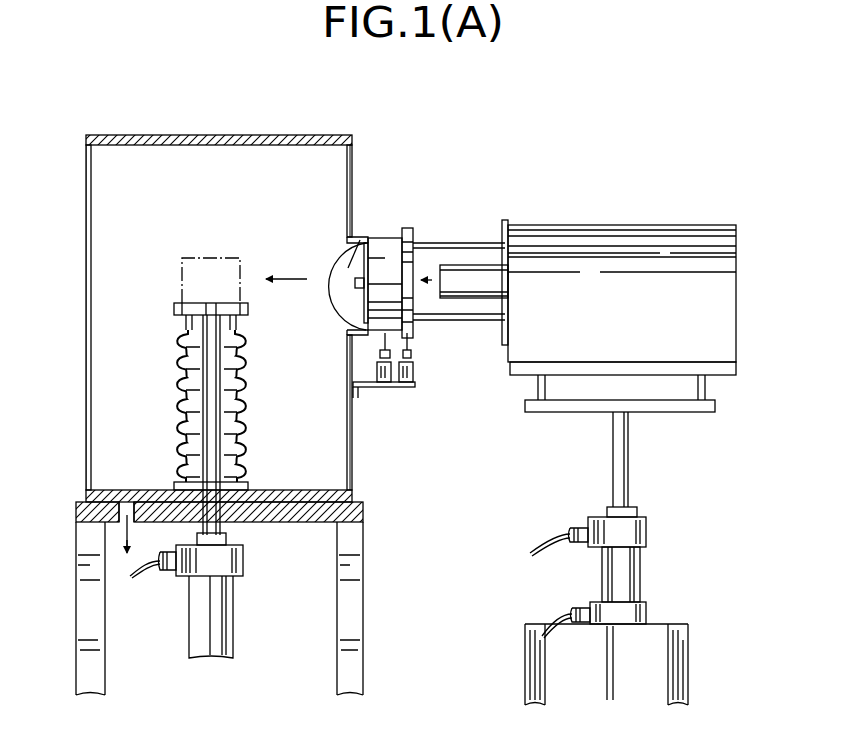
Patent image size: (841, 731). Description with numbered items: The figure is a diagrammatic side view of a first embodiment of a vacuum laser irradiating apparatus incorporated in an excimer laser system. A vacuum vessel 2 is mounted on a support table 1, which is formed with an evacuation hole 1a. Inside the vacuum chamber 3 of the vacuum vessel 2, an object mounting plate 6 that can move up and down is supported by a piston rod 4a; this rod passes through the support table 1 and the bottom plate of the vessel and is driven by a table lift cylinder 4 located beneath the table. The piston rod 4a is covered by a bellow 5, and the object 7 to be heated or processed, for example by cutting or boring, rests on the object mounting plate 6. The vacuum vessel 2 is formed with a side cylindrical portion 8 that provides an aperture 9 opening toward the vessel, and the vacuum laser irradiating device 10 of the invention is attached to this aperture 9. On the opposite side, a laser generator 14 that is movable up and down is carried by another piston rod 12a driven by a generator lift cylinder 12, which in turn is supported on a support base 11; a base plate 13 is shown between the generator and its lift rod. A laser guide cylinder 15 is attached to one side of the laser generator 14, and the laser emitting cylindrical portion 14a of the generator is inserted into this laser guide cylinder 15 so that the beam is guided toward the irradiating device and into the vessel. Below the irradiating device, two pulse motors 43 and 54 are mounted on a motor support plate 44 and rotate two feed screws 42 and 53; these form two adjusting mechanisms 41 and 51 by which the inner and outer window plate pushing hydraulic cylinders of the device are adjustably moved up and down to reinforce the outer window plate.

The support table 1 is at (364, 510).
The evacuation hole 1a is at (128, 524).
The vacuum vessel 2 is at (87, 133).
The vacuum chamber 3 is at (133, 187).
The table lift cylinder 4 is at (189, 650).
The piston rod 4a is at (213, 434).
The bellow 5 is at (250, 372).
The object mounting plate 6 is at (249, 312).
The object 7 is at (182, 258).
The side cylindrical portion 8 is at (359, 240).
The aperture 9 is at (370, 242).
The vacuum laser irradiating device 10 is at (462, 244).
The support base 11 is at (690, 636).
The generator lift cylinder 12 is at (640, 580).
The piston rod 12a is at (628, 450).
The base plate 13 is at (715, 406).
The laser generator 14 is at (736, 300).
The laser emitting cylindrical portion 14a is at (496, 268).
The laser guide cylinder 15 is at (464, 242).
The first adjusting mechanism 41 is at (380, 392).
The feed screw 42 is at (383, 345).
The pulse motor 43 is at (377, 372).
The motor support plate 44 is at (412, 388).
The second adjusting mechanism 51 is at (409, 392).
The feed screw 53 is at (410, 345).
The pulse motor 54 is at (413, 372).